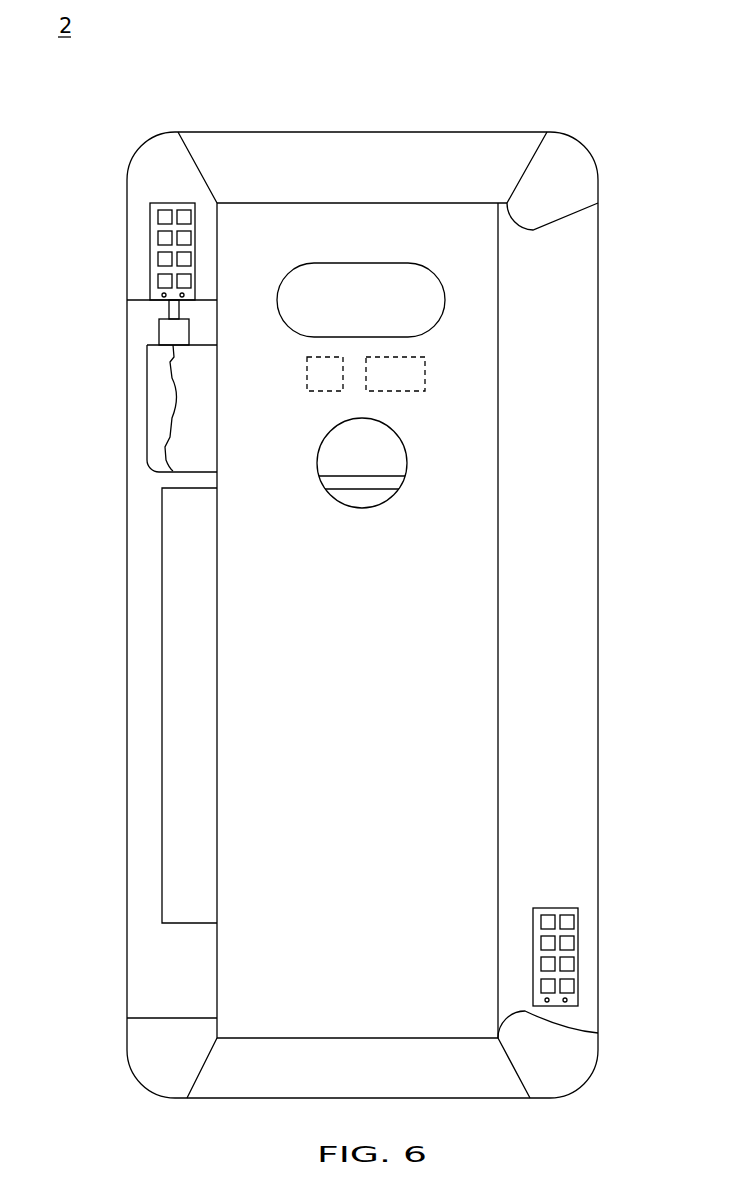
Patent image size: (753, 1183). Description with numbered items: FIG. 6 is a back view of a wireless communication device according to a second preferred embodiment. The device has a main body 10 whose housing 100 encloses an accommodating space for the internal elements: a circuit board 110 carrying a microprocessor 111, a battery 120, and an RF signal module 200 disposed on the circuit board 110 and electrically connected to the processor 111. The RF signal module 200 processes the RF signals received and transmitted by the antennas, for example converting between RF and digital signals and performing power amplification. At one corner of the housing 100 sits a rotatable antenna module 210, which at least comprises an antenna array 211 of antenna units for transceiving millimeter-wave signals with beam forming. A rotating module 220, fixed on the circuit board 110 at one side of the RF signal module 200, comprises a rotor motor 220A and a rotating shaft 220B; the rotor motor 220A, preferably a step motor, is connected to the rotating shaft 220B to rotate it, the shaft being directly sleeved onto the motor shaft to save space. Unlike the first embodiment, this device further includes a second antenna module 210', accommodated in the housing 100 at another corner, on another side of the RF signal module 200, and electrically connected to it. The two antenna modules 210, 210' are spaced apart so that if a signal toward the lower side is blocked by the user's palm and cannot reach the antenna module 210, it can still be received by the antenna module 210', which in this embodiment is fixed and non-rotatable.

The main body 10 is at (608, 88).
The housing 100 is at (599, 290).
The circuit board 110 is at (183, 446).
The microprocessor 111 is at (398, 373).
The battery 120 is at (189, 656).
The RF signal module 200 is at (323, 375).
The antenna module 210 is at (133, 189).
The antenna module 210' is at (611, 957).
The antenna array 211 is at (165, 212).
The rotating module 220 is at (174, 337).
The rotor motor 220A is at (172, 330).
The rotating shaft 220B is at (169, 311).